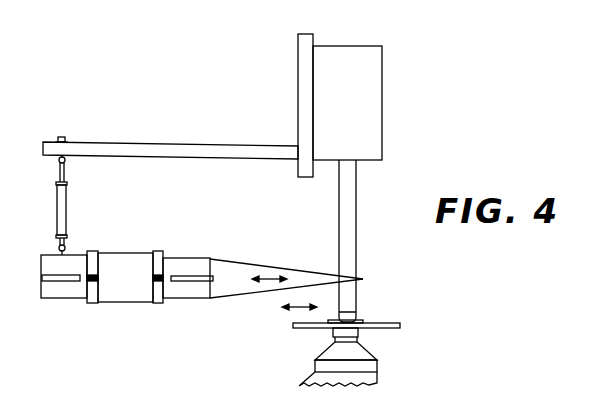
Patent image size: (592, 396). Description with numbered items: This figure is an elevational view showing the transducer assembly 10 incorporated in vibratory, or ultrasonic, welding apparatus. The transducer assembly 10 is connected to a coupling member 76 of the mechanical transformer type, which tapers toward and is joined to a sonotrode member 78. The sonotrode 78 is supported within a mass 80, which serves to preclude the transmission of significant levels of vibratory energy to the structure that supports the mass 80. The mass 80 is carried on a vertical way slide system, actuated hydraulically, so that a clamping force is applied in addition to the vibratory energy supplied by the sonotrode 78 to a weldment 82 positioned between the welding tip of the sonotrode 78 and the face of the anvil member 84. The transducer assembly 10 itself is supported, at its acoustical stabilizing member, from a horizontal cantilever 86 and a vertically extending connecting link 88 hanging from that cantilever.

The transducer assembly 10 is at (136, 244).
The coupling member 76 is at (235, 262).
The sonotrode member 78 is at (352, 229).
The mass 80 is at (377, 71).
The weldment 82 is at (360, 323).
The anvil member 84 is at (365, 377).
The cantilever 86 is at (163, 143).
The connecting link 88 is at (65, 207).